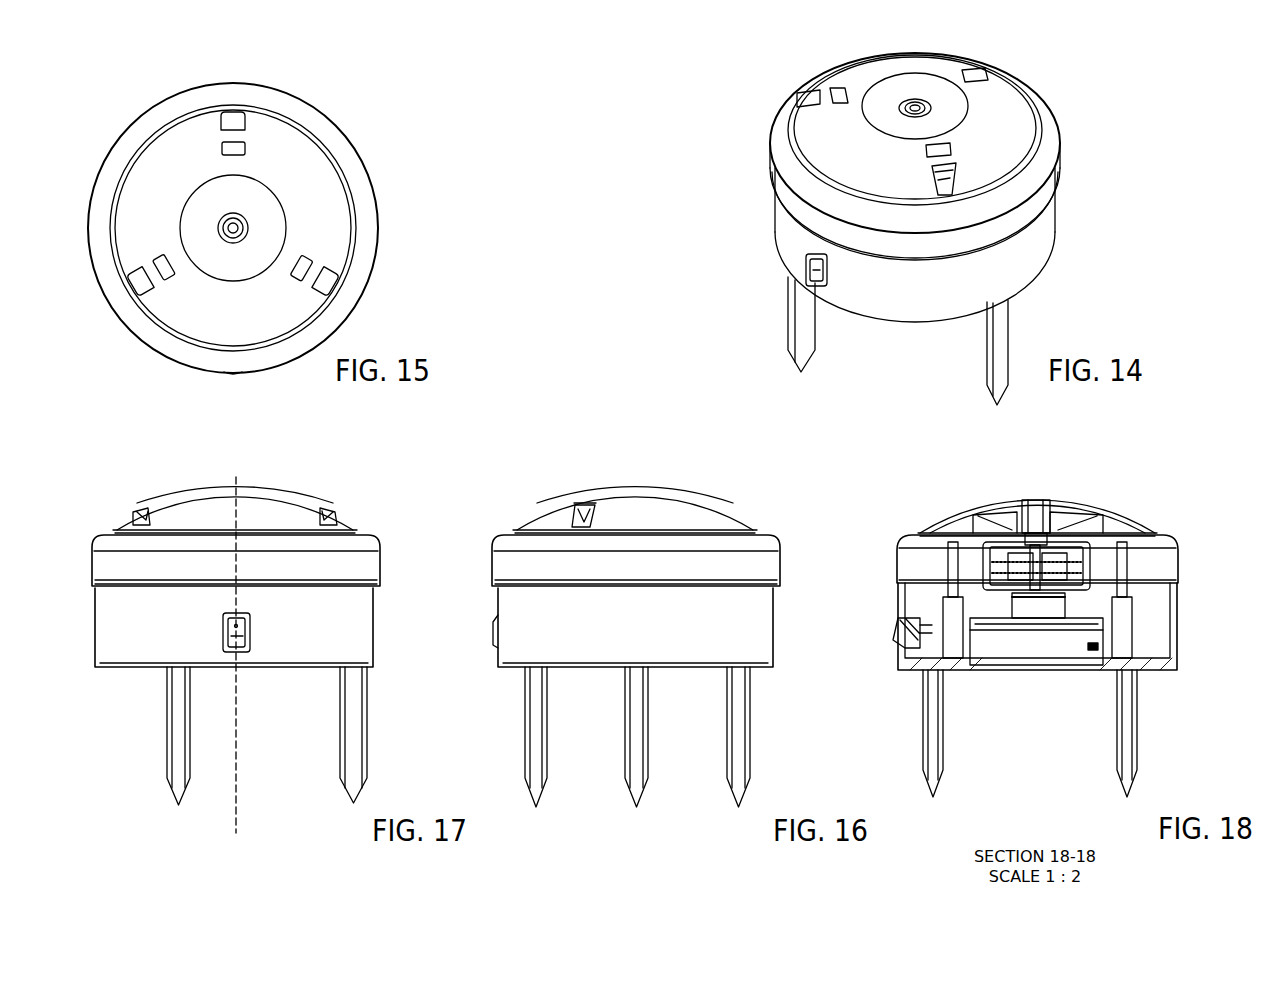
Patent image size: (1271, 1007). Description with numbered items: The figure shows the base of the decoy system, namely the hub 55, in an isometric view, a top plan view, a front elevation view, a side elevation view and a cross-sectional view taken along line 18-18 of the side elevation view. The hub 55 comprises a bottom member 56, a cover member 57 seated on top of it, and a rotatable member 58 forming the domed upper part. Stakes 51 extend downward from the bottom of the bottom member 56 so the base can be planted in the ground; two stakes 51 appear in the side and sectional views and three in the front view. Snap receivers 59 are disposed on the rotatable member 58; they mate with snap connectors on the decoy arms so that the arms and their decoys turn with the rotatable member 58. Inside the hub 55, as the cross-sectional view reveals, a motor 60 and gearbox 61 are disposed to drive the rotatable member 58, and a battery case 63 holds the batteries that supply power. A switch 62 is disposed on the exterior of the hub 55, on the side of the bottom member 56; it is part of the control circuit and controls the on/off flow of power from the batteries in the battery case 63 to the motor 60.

In FIG. 17, the stakes 51 is at (357, 760).
In FIG. 16, the stakes 51 is at (668, 737).
In FIG. 18, the stakes 51 is at (945, 750).
In FIG. 15, the hub 55 is at (400, 148).
In FIG. 14, the hub 55 is at (1107, 132).
In FIG. 17, the hub 55 is at (350, 484).
In FIG. 16, the hub 55 is at (768, 475).
In FIG. 18, the hub 55 is at (1163, 508).
In FIG. 14, the bottom member 56 is at (986, 293).
In FIG. 17, the bottom member 56 is at (374, 644).
In FIG. 16, the bottom member 56 is at (667, 627).
In FIG. 18, the bottom member 56 is at (1178, 622).
In FIG. 15, the cover member 57 is at (366, 242).
In FIG. 14, the cover member 57 is at (1062, 187).
In FIG. 17, the cover member 57 is at (381, 567).
In FIG. 16, the cover member 57 is at (664, 562).
In FIG. 18, the cover member 57 is at (1179, 561).
In FIG. 14, the rotatable member 58 is at (864, 176).
In FIG. 17, the rotatable member 58 is at (346, 519).
In FIG. 16, the rotatable member 58 is at (665, 511).
In FIG. 18, the rotatable member 58 is at (961, 499).
In FIG. 15, the snap receivers 59 is at (241, 113).
In FIG. 14, the snap receivers 59 is at (990, 70).
In FIG. 17, the snap receivers 59 is at (135, 515).
In FIG. 16, the snap receivers 59 is at (558, 500).
In FIG. 18, the motor 60 is at (1036, 604).
In FIG. 18, the gearbox 61 is at (993, 600).
In FIG. 15, the switch 62 is at (235, 376).
In FIG. 14, the switch 62 is at (833, 277).
In FIG. 17, the switch 62 is at (251, 634).
In FIG. 16, the switch 62 is at (465, 652).
In FIG. 18, the switch 62 is at (896, 642).
In FIG. 18, the battery case 63 is at (1026, 640).
In FIG. 17, the section line 18- 18 is at (236, 477).